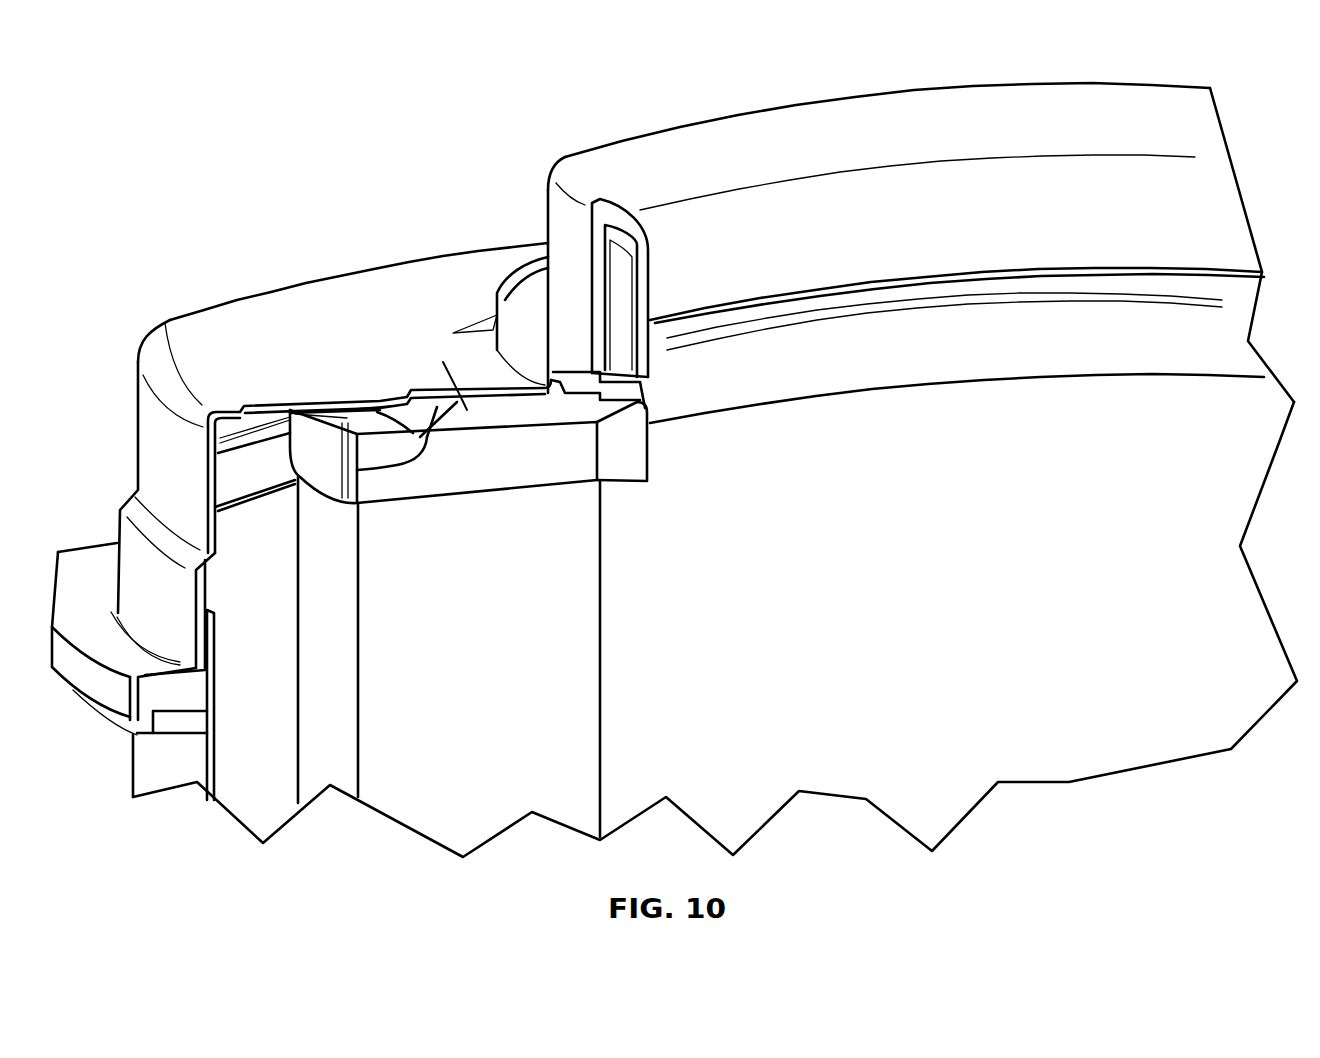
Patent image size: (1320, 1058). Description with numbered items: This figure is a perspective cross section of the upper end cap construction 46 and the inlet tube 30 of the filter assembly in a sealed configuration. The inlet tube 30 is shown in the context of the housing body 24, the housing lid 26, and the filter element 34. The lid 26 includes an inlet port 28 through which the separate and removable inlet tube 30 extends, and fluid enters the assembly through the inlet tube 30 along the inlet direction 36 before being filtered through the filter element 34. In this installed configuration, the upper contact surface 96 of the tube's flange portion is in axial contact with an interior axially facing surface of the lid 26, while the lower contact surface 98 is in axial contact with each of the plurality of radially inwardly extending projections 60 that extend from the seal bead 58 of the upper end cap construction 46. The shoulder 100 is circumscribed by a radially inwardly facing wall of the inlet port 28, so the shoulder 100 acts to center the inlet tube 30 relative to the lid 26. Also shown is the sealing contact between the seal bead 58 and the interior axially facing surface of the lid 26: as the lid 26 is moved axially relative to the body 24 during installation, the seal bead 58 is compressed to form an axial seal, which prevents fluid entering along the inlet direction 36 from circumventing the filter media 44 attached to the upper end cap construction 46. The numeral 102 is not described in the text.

The body 24 is at (145, 768).
The lid 26 is at (145, 407).
The inlet port 28 is at (510, 328).
The inlet tube 30 is at (944, 277).
The filter element 34 is at (674, 702).
The inlet direction 36 is at (1098, 178).
The filter media 44 is at (603, 628).
The upper end cap construction 46 is at (660, 495).
The seal bead 58 is at (437, 407).
The radially inwardly extending projections 60 is at (607, 380).
The upper contact surface 96 is at (477, 410).
The lower contact surface 98 is at (513, 400).
The shoulder 100 is at (578, 345).
The support rail 102 is at (292, 472).